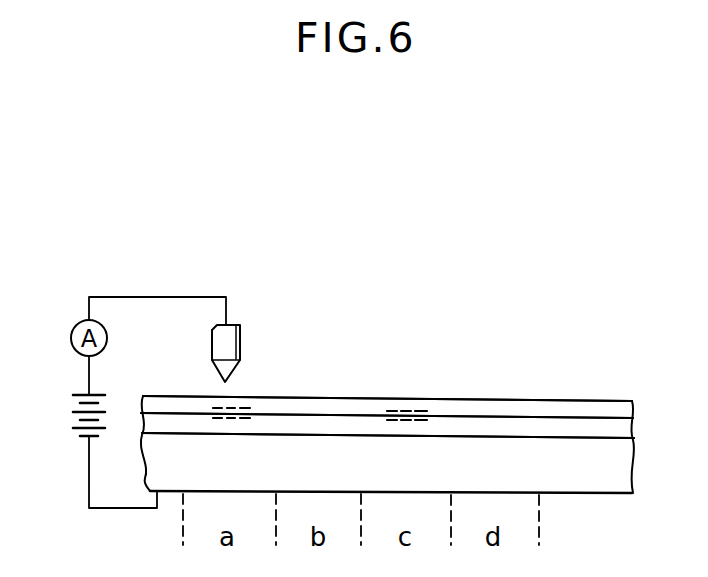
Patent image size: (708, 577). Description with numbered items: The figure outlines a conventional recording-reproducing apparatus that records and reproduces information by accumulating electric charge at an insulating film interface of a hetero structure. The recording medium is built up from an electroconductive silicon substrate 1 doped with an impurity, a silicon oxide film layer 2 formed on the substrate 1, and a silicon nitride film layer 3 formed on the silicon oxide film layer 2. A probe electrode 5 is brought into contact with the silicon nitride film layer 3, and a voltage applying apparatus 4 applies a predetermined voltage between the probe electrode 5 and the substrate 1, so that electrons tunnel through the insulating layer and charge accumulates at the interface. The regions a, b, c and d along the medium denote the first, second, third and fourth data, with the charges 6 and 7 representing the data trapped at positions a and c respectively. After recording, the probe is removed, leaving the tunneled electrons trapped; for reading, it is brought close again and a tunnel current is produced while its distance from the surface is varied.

The silicon substrate 1 is at (633, 478).
The silicon oxide film layer 2 is at (633, 427).
The silicon nitride film layer 3 is at (505, 416).
The voltage applying apparatus 4 is at (73, 410).
The probe electrode 5 is at (237, 325).
The electric charges at position of first data 6 is at (243, 408).
The electric charges at position of third data 7 is at (400, 411).